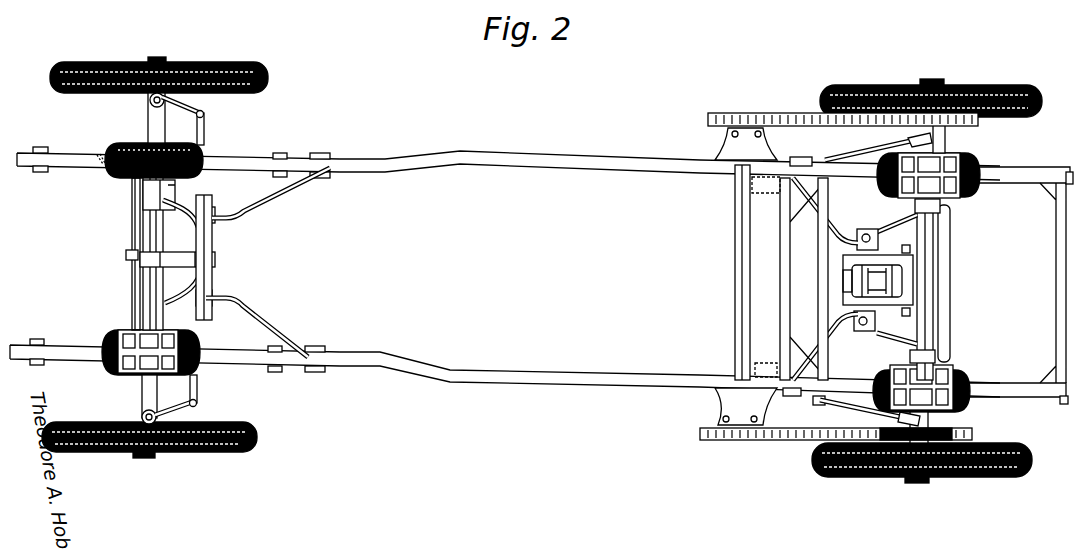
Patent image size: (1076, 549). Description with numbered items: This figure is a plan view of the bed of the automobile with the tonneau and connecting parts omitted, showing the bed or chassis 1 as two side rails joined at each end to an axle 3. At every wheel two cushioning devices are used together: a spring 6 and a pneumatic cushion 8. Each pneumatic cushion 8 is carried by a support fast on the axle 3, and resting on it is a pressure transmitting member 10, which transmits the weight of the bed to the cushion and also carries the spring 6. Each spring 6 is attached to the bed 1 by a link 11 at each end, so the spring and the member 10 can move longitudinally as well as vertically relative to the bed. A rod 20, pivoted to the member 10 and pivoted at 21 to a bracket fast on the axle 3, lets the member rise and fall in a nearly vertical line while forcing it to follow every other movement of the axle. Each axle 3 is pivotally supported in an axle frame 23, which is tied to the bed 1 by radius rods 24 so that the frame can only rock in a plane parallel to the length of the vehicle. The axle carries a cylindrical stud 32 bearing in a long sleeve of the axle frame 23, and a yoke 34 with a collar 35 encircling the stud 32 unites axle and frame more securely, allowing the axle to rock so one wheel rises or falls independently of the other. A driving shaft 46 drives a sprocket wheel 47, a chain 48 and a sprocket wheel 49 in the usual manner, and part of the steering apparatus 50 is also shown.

The bed or chassis 1 is at (584, 164).
The axle 3 is at (150, 275).
The spring 6 is at (100, 165).
The pneumatic cushion 8 is at (118, 148).
The pressure transmitting member 10 is at (175, 342).
The link 11 is at (45, 150).
The rod 20 is at (178, 205).
The pivot 21 is at (942, 206).
The axle frame 23 is at (212, 274).
The radius rod 24 is at (268, 214).
The cylindrical stud 32 is at (126, 254).
The yoke 34 is at (196, 218).
The collar 35 is at (213, 258).
The driving shaft 46 is at (737, 272).
The sprocket wheel 47 is at (722, 130).
The chain 48 is at (786, 113).
The sprocket wheel 49 is at (955, 437).
The steering apparatus 50 is at (205, 128).